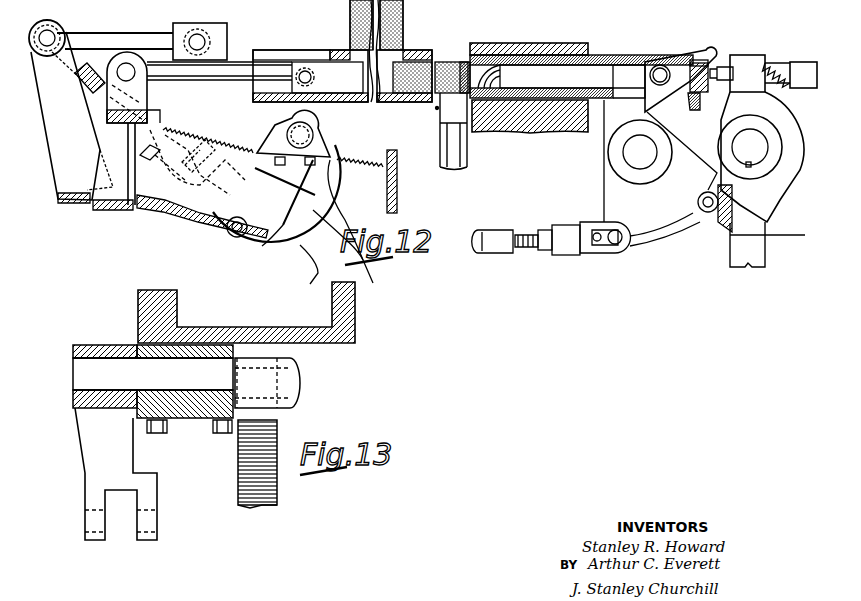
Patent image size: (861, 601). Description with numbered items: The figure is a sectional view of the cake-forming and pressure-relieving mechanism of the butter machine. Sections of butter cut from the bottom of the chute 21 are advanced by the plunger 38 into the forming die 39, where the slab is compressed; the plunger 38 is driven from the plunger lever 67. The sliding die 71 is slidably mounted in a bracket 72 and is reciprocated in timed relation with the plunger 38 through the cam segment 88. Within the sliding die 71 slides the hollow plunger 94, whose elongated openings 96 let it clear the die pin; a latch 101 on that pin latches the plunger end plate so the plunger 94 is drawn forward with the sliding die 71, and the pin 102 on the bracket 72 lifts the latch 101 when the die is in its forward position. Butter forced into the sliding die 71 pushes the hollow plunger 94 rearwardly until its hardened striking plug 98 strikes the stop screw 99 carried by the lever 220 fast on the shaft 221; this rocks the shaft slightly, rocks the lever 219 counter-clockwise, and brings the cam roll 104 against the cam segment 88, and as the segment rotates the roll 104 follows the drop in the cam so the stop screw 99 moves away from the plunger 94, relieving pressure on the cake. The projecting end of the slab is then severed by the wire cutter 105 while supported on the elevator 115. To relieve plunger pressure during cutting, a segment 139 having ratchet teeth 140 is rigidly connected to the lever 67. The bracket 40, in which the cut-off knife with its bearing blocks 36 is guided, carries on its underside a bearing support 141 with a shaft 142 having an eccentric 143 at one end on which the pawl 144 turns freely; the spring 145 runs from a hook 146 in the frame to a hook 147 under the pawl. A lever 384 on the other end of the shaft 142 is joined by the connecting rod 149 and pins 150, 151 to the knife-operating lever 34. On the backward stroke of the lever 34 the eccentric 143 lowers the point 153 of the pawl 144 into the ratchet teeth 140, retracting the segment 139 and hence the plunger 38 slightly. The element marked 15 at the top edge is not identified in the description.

In FIG. 12, the direction arrow 15 is at (306, 7).
In FIG. 12, the chute 21 is at (400, 20).
In FIG. 12, the lever 34 is at (150, 30).
In FIG. 12, the bearing blocks 36 is at (227, 45).
In FIG. 12, the plunger 38 is at (348, 97).
In FIG. 12, the forming die 39 is at (395, 105).
In FIG. 13, the bracket 40 is at (356, 332).
In FIG. 12, the plunger lever 67 is at (92, 25).
In FIG. 12, the sliding die 71 is at (600, 62).
In FIG. 12, the bracket 72 is at (510, 44).
In FIG. 12, the cam segment 88 is at (604, 203).
In FIG. 12, the hollow plunger 94 is at (550, 75).
In FIG. 12, the elongated openings 96 is at (628, 70).
In FIG. 12, the striking plug 98 is at (725, 66).
In FIG. 12, the stop screw 99 is at (800, 62).
In FIG. 12, the latch 101 is at (700, 60).
In FIG. 12, the pin 102 is at (605, 140).
In FIG. 12, the cam roll 104 is at (700, 212).
In FIG. 12, the wire cutter 105 is at (437, 110).
In FIG. 12, the elevator 115 is at (462, 172).
In FIG. 12, the segment 139 is at (295, 272).
In FIG. 13, the segment 139 is at (278, 508).
In FIG. 12, the ratchet teeth 140 is at (192, 130).
In FIG. 13, the bearing support 141 is at (197, 433).
In FIG. 13, the shaft 142 is at (97, 368).
In FIG. 13, the eccentric 143 is at (245, 380).
In FIG. 12, the pawl 144 is at (280, 128).
In FIG. 13, the pawl 144 is at (300, 409).
In FIG. 12, the spring 145 is at (375, 180).
In FIG. 12, the hook 146 is at (398, 198).
In FIG. 12, the hook 147 is at (355, 255).
In FIG. 12, the connecting rod 149 is at (198, 222).
In FIG. 12, the pin 150 is at (230, 235).
In FIG. 12, the pin 151 is at (47, 37).
In FIG. 12, the point 153 is at (258, 178).
In FIG. 12, the lever 219 is at (748, 268).
In FIG. 12, the lever 220 is at (722, 238).
In FIG. 12, the shaft 221 is at (763, 157).
In FIG. 12, the lever 384 is at (260, 247).
In FIG. 13, the lever 384 is at (150, 542).